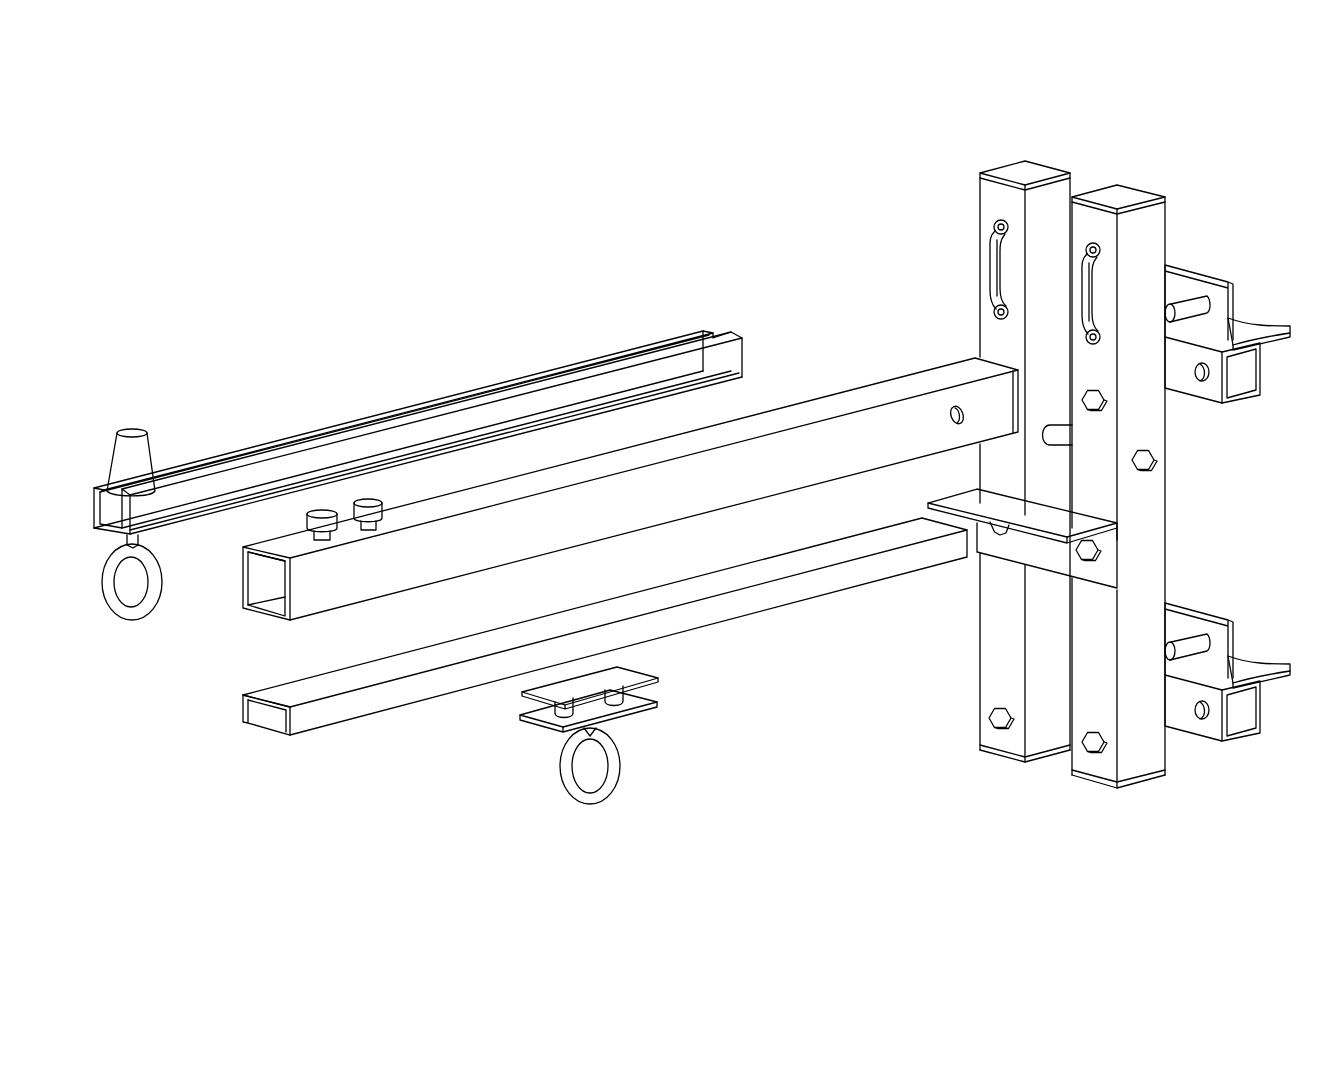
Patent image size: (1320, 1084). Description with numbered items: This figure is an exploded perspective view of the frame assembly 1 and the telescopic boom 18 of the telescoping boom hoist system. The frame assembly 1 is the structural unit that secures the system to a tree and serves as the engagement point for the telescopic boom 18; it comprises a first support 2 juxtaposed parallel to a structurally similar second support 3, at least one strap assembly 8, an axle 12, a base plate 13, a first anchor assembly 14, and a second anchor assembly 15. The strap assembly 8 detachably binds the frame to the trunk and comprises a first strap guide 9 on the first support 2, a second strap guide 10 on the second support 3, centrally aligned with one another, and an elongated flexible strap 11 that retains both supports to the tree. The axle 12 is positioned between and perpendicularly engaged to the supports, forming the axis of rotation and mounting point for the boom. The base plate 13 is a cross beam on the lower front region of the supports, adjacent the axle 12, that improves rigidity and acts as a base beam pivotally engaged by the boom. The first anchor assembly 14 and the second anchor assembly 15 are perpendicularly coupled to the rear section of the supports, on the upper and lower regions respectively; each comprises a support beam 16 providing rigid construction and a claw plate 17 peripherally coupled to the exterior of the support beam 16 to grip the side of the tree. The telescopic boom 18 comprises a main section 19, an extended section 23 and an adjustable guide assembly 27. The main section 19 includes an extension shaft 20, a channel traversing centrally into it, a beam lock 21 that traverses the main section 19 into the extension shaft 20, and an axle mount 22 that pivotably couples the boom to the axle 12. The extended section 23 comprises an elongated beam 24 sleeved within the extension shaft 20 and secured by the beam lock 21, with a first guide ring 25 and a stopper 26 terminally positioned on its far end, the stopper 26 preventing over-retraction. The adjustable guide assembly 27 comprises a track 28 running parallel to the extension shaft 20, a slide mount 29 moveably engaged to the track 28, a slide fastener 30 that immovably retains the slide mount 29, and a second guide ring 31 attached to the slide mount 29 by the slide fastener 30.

The frame assembly 1 is at (963, 132).
The first support 2 is at (1125, 188).
The second support 3 is at (1030, 165).
The strap assembly 8 is at (970, 270).
The first strap guide 9 is at (1097, 292).
The second strap guide 10 is at (994, 226).
The strap 11 is at (1001, 719).
The axle 12 is at (1066, 433).
The base plate 13 is at (1095, 552).
The first anchor assembly 14 is at (1219, 253).
The second anchor assembly 15 is at (1207, 597).
The support beam 16 is at (1246, 405).
The claw plate 17 is at (1243, 322).
The telescopic boom 18 is at (322, 394).
The main section 19 is at (757, 428).
The extension shaft 20 is at (268, 575).
The beam lock 21 is at (328, 524).
The axle mount 22 is at (953, 410).
The extended section 23 is at (540, 330).
The elongated beam 24 is at (458, 394).
The first guide ring 25 is at (125, 618).
The stopper 26 is at (142, 432).
The adjustable guide assembly 27 is at (427, 728).
The track 28 is at (262, 712).
The slide mount 29 is at (660, 677).
The slide fastener 30 is at (665, 713).
The second guide ring 31 is at (622, 766).